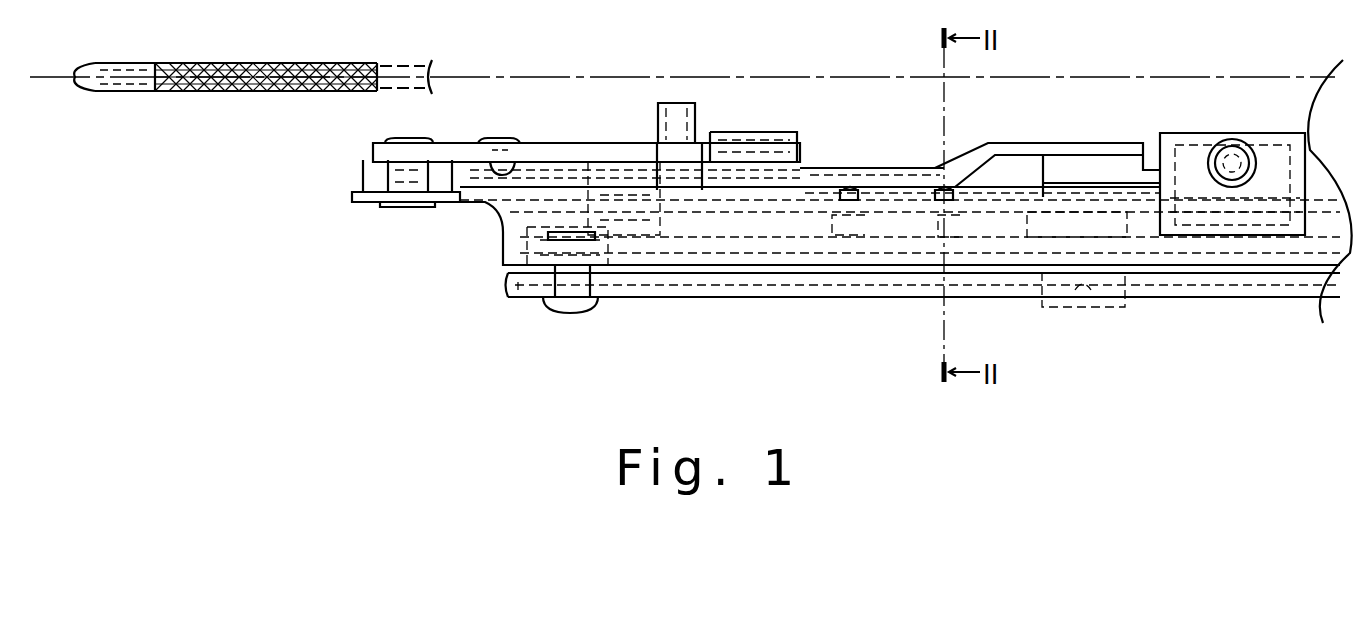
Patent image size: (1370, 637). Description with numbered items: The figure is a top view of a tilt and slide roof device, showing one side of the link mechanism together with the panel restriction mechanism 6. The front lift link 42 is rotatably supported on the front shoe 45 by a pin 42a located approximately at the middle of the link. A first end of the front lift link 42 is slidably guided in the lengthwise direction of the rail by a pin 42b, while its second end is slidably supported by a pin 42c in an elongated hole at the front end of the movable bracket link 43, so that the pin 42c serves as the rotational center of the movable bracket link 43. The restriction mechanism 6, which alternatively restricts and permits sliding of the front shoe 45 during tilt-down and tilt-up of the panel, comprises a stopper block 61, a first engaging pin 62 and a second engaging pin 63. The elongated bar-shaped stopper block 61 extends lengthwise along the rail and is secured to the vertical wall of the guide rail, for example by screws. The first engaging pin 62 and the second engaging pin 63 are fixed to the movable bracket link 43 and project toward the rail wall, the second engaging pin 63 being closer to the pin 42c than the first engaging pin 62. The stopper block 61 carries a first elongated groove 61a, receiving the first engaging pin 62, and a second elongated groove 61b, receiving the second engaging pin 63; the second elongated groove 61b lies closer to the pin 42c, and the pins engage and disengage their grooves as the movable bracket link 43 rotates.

The panel restriction mechanism 6 is at (1000, 240).
The front lift link 42 is at (590, 147).
The pin 42a is at (500, 133).
The pin 42b is at (692, 105).
The pin 42c is at (412, 210).
The movable bracket link 43 is at (893, 195).
The front shoe 45 is at (828, 165).
The stopper block 61 is at (990, 195).
The first elongated groove 61a is at (950, 233).
The second elongated groove 61b is at (830, 228).
The first engaging pin 62 is at (937, 218).
The second engaging pin 63 is at (850, 218).